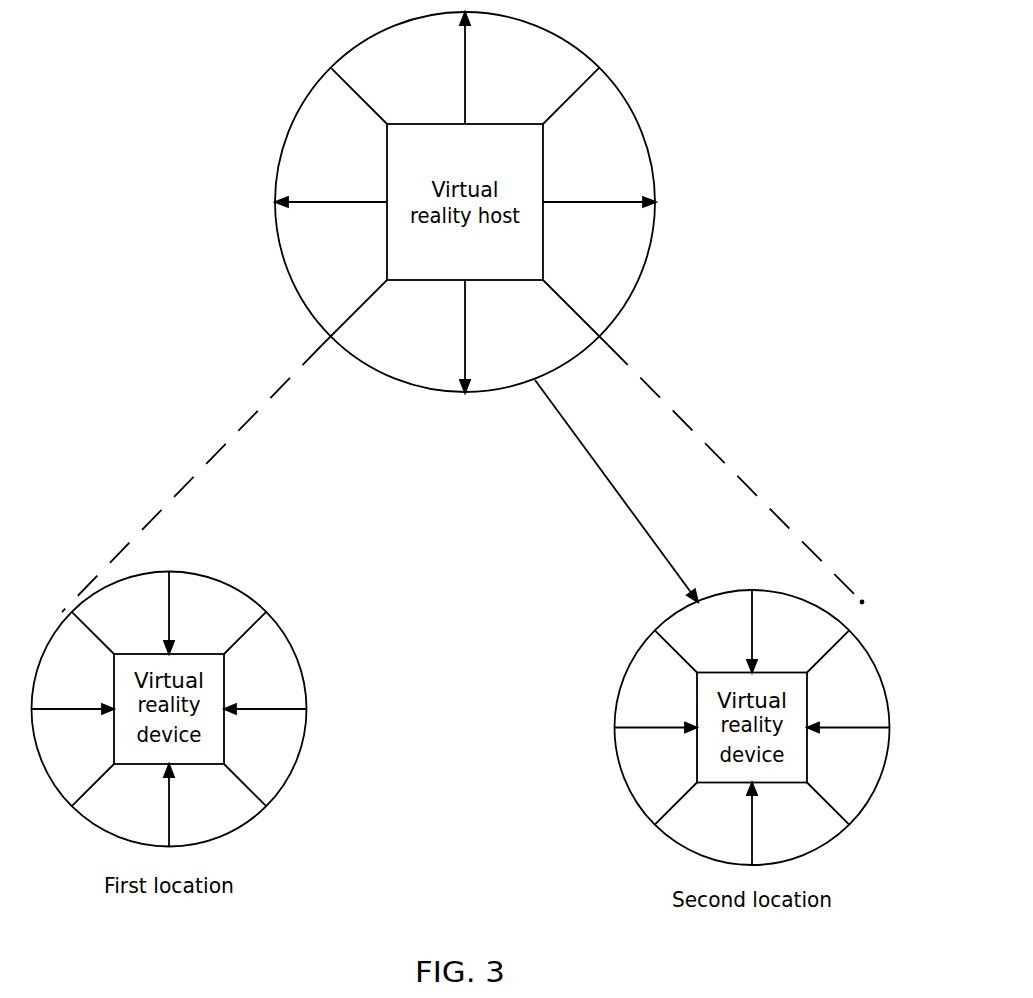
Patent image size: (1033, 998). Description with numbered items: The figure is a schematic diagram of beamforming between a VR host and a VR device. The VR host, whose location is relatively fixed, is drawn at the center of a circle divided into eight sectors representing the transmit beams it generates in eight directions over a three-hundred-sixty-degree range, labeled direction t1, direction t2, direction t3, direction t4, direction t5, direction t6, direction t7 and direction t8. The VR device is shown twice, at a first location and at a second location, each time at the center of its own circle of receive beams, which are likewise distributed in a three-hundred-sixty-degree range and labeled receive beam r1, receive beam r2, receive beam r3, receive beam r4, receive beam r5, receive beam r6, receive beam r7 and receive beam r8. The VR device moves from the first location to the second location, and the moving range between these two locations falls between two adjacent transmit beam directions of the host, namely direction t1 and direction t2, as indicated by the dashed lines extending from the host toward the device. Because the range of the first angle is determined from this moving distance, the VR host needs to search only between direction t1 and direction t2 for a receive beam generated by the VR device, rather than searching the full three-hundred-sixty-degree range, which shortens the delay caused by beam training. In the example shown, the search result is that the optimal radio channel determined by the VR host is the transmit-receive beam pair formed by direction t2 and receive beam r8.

The direction t1 of transmit beam t1 is at (439, 336).
The direction t2 of transmit beam t2 is at (553, 312).
The direction t3 of transmit beam t3 is at (599, 228).
The direction t4 of transmit beam t4 is at (571, 113).
The direction t5 of transmit beam t5 is at (487, 68).
The direction t6 of transmit beam t6 is at (378, 92).
The direction t7 of transmit beam t7 is at (331, 171).
The direction t8 of transmit beam t8 is at (354, 293).
The receive beam r1 is at (480, 622).
The receive beam r2 is at (536, 658).
The receive beam r3 is at (557, 739).
The receive beam r4 is at (523, 797).
The receive beam r5 is at (436, 814).
The receive beam r6 is at (383, 778).
The receive beam r7 is at (365, 691).
The receive beam r8 is at (391, 639).